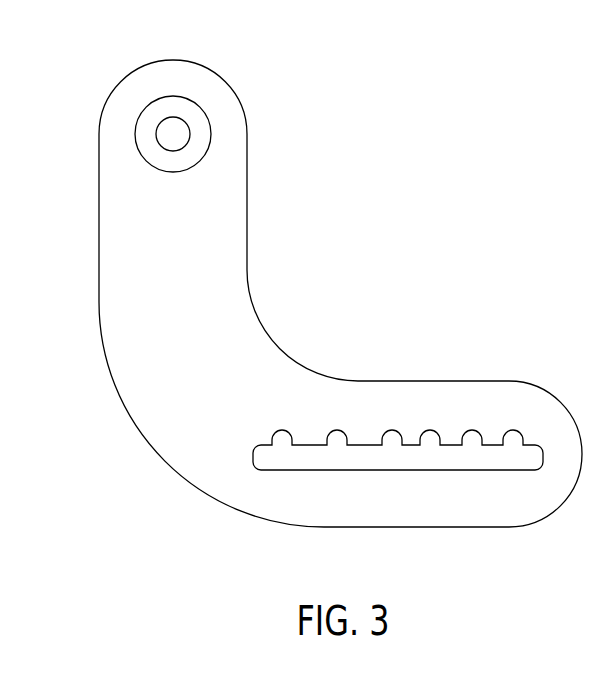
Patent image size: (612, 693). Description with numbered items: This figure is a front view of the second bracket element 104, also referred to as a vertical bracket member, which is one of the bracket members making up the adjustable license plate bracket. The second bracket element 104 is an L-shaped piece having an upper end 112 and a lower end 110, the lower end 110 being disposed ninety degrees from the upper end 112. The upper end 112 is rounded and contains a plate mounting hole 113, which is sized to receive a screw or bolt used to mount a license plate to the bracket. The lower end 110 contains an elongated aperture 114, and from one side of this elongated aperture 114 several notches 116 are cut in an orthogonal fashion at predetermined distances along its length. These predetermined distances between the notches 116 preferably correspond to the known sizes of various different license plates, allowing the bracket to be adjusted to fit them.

The second bracket element 104 is at (305, 301).
The lower end 110 is at (487, 378).
The upper end 112 is at (92, 120).
The plate mounting hole 113 is at (174, 131).
The elongated aperture 114 is at (398, 454).
The notches 116 is at (388, 432).